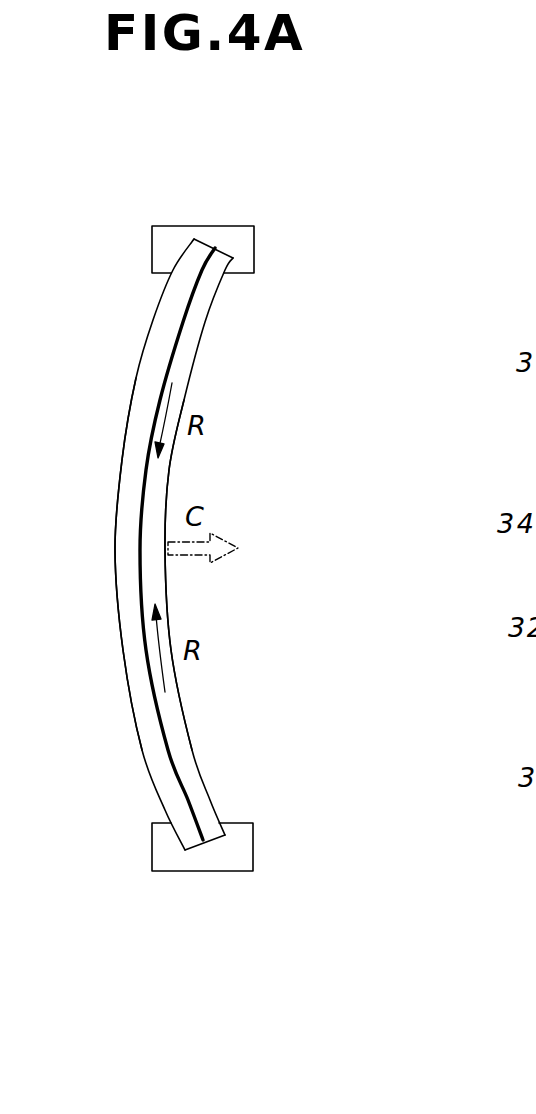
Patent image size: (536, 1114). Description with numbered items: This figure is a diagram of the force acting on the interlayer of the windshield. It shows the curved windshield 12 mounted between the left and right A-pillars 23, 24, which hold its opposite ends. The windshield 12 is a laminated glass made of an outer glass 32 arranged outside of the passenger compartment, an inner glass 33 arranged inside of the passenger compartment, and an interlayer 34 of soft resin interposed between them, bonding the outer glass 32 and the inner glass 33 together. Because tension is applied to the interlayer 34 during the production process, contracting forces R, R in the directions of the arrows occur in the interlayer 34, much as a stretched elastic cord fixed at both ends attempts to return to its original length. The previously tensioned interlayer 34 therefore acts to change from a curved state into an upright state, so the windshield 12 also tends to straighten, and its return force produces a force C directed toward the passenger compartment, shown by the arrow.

The windshield 12 is at (131, 376).
The left A-pillar 23 is at (202, 871).
The right A-pillar 24 is at (205, 226).
The outer glass 32 is at (141, 748).
The inner glass 33 is at (192, 743).
The interlayer 34 is at (184, 322).